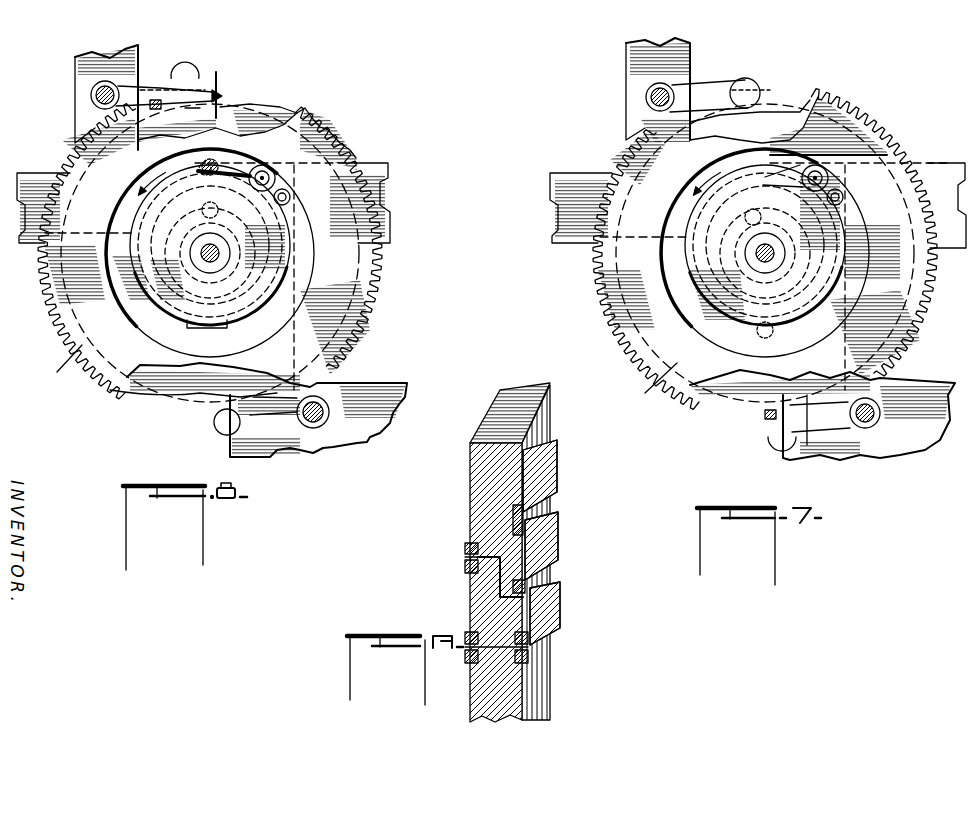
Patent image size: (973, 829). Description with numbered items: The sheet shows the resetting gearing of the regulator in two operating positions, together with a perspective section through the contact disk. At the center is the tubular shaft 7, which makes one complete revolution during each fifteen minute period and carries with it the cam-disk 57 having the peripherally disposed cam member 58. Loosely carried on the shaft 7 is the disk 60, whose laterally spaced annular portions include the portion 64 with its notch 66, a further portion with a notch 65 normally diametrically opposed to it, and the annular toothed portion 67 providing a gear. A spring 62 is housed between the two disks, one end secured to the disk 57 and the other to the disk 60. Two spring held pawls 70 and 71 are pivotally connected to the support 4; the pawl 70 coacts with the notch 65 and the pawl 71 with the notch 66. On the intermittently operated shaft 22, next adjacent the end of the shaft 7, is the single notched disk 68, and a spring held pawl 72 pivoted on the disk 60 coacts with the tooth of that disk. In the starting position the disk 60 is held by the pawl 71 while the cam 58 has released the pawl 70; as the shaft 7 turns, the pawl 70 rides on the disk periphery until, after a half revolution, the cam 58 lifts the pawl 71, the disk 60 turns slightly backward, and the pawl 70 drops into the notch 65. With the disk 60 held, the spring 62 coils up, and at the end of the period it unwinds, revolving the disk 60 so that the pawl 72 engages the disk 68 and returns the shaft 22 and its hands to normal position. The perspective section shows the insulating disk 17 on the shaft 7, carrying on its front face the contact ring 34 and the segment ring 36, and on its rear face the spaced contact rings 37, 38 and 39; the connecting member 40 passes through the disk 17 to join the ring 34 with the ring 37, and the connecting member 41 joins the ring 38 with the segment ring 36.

In FIG. 8, the support 4 is at (388, 168).
In FIG. 7, the support 4 is at (562, 175).
In FIG. 8, the tubular shaft 7 is at (63, 367).
In FIG. 7, the tubular shaft 7 is at (652, 386).
In FIG. 9, the disk 17 is at (485, 470).
In FIG. 8, the intermittently operated shaft 22 is at (217, 250).
In FIG. 7, the intermittently operated shaft 22 is at (776, 253).
In FIG. 9, the contact ring 34 is at (470, 662).
In FIG. 9, the segment ring 36 is at (465, 552).
In FIG. 9, the contact ring 37 is at (558, 595).
In FIG. 9, the contact ring 38 is at (556, 530).
In FIG. 9, the contact ring 39 is at (558, 468).
In FIG. 9, the connecting member 40 is at (505, 650).
In FIG. 9, the connecting member 41 is at (500, 580).
In FIG. 8, the cam-disk 57 is at (218, 98).
In FIG. 8, the cam member 58 is at (160, 98).
In FIG. 7, the cam member 58 is at (762, 414).
In FIG. 8, the disk 60 is at (237, 246).
In FIG. 7, the disk 60 is at (790, 245).
In FIG. 8, the spring 62 is at (307, 204).
In FIG. 7, the spring 62 is at (858, 205).
In FIG. 8, the annular portion 64 is at (239, 114).
In FIG. 8, the notch 65 is at (197, 108).
In FIG. 7, the notch 65 is at (812, 420).
In FIG. 8, the notch 66 is at (240, 422).
In FIG. 7, the notch 66 is at (760, 110).
In FIG. 8, the annular toothed portion 67 is at (210, 253).
In FIG. 7, the annular toothed portion 67 is at (765, 249).
In FIG. 8, the notched disk 68 is at (228, 253).
In FIG. 7, the notched disk 68 is at (781, 253).
In FIG. 8, the spring held pawl 70 is at (298, 422).
In FIG. 7, the spring held pawl 70 is at (856, 425).
In FIG. 8, the spring held pawl 71 is at (188, 75).
In FIG. 7, the spring held pawl 71 is at (697, 87).
In FIG. 8, the spring held pawl 72 is at (268, 136).
In FIG. 7, the spring held pawl 72 is at (819, 134).